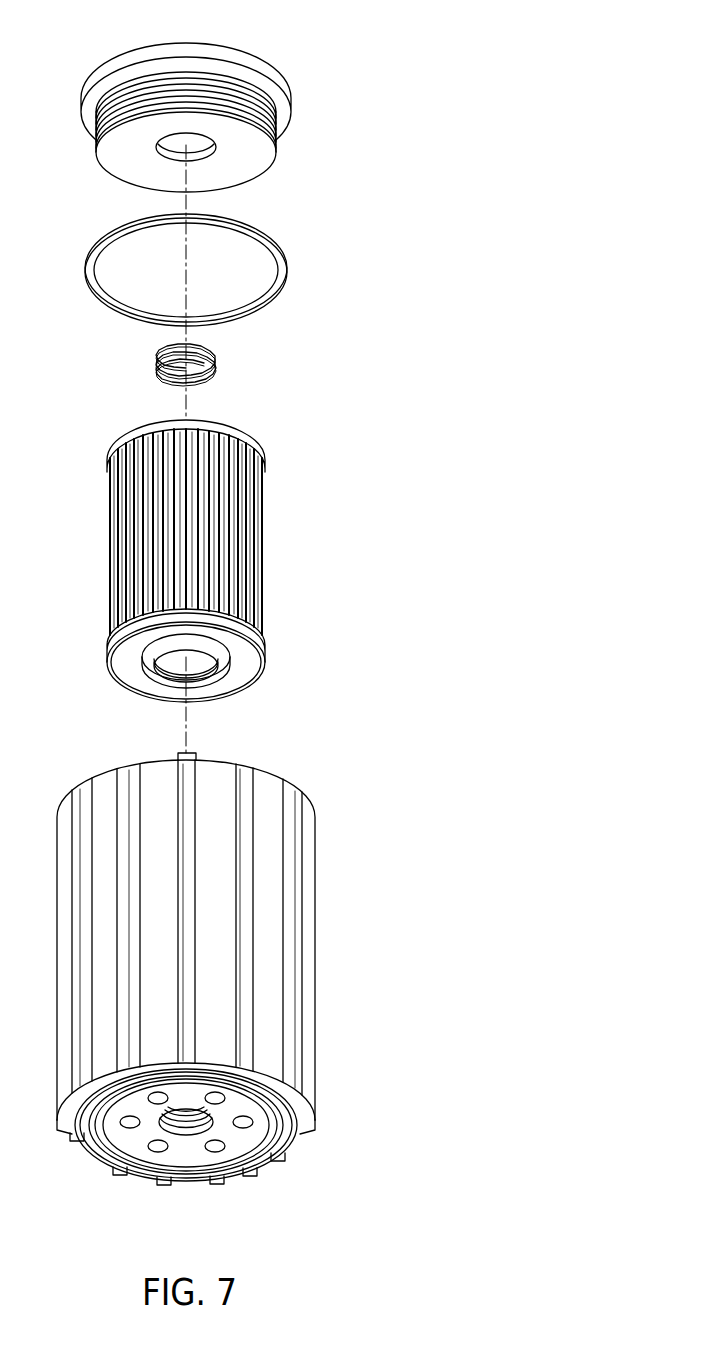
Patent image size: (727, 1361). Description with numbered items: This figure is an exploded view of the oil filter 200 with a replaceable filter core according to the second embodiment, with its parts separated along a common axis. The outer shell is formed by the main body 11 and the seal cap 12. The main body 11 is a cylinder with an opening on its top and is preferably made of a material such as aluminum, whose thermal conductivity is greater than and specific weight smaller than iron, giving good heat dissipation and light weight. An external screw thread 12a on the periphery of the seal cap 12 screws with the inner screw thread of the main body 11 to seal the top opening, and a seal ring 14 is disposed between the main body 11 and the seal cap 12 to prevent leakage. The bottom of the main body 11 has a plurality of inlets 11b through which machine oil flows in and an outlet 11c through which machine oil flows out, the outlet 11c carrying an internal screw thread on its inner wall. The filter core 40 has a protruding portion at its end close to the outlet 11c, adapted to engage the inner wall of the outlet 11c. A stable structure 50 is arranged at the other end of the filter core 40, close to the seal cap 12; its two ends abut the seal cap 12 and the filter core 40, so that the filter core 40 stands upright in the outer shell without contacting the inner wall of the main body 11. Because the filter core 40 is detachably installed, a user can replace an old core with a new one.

The oil filter 200 is at (402, 122).
The seal cap 12 is at (293, 84).
The external screw thread 12a is at (278, 127).
The seal ring 14 is at (283, 287).
The stable structure 50 is at (217, 367).
The filter core 40 is at (265, 549).
The main body 11 is at (315, 915).
The inlets 11b is at (247, 1124).
The outlet 11c is at (187, 1135).